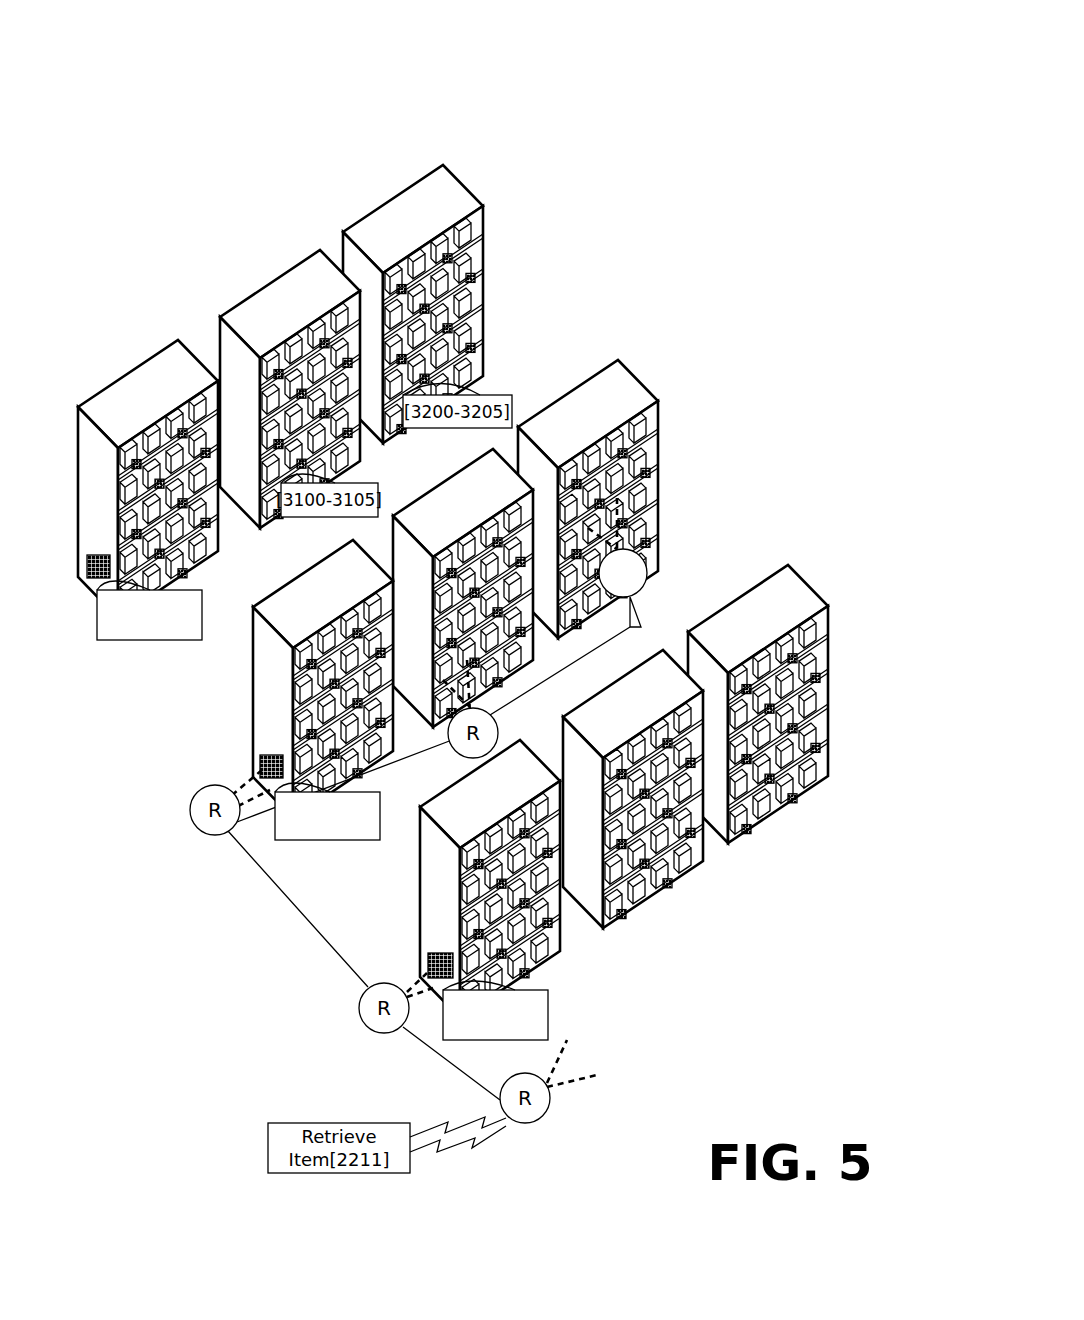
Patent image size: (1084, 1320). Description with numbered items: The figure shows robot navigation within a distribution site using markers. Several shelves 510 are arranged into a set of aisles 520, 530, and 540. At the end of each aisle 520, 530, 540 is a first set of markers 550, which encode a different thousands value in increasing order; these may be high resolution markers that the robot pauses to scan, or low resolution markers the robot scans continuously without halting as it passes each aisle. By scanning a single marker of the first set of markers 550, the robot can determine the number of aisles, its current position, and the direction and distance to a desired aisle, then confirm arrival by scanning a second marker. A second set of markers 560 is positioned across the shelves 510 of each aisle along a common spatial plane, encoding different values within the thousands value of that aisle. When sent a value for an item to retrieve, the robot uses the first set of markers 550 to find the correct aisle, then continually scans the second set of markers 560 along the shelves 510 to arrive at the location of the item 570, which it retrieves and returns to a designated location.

The shelves 510 is at (480, 520).
The aisle 520 is at (474, 170).
The aisle 530 is at (649, 384).
The aisle 540 is at (814, 580).
The first set of markers 550 is at (136, 637).
The second set of markers 560 is at (478, 385).
The item 570 is at (609, 582).